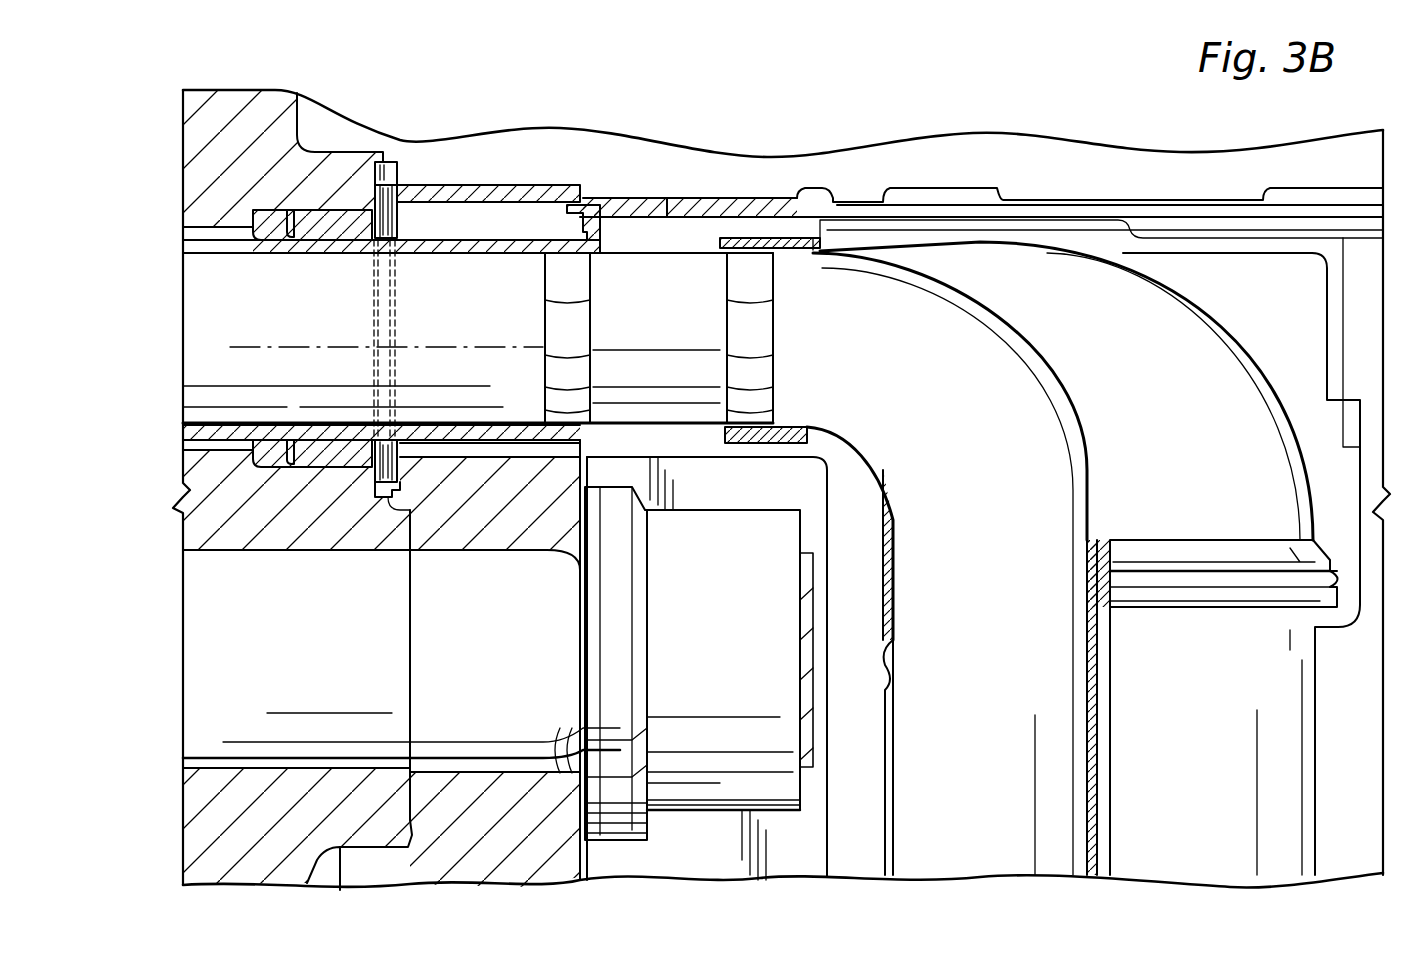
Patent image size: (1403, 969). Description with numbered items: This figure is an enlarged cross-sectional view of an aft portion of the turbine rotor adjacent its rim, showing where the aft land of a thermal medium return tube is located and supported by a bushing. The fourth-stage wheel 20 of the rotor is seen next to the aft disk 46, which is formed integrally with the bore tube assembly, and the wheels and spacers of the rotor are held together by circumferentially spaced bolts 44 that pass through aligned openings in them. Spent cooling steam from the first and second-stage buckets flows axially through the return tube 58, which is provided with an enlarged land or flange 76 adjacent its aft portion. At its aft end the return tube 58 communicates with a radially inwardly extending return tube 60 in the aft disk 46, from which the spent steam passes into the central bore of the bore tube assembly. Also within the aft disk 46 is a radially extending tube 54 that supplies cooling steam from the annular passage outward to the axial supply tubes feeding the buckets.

The wheel 20 is at (230, 117).
The return tube 58 is at (320, 290).
The enlarged land or flange 76 is at (320, 440).
The bolt 44 is at (340, 668).
The aft disk 46 is at (570, 863).
The return tube 60 is at (982, 765).
The tube 54 is at (1210, 765).